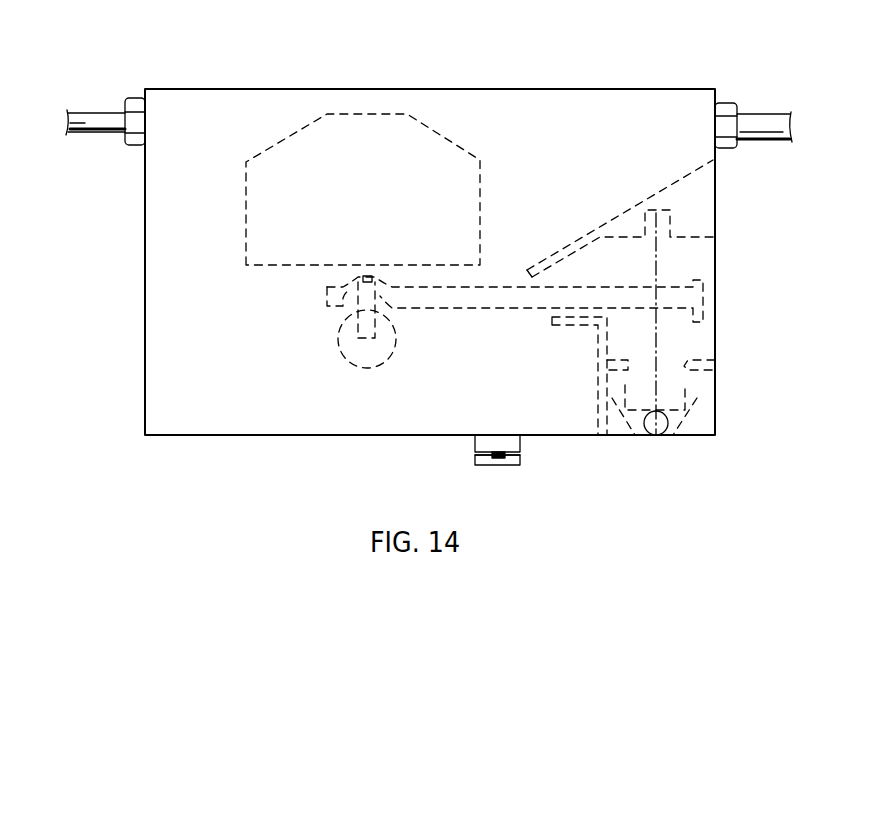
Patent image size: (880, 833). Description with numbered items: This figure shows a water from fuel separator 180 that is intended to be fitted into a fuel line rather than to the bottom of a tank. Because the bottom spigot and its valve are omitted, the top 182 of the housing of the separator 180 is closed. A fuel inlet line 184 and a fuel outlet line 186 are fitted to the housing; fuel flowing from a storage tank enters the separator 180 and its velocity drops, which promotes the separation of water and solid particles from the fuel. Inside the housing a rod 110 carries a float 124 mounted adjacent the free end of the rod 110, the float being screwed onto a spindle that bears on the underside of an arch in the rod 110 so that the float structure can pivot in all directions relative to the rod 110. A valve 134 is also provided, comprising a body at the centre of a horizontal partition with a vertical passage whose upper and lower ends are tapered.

The separator 180 is at (429, 235).
The top of the housing 182 is at (549, 70).
The fuel inlet line 184 is at (763, 140).
The fuel outlet line 186 is at (100, 133).
The float 124 is at (250, 265).
The rod 110 is at (462, 308).
The valve 134 is at (692, 395).